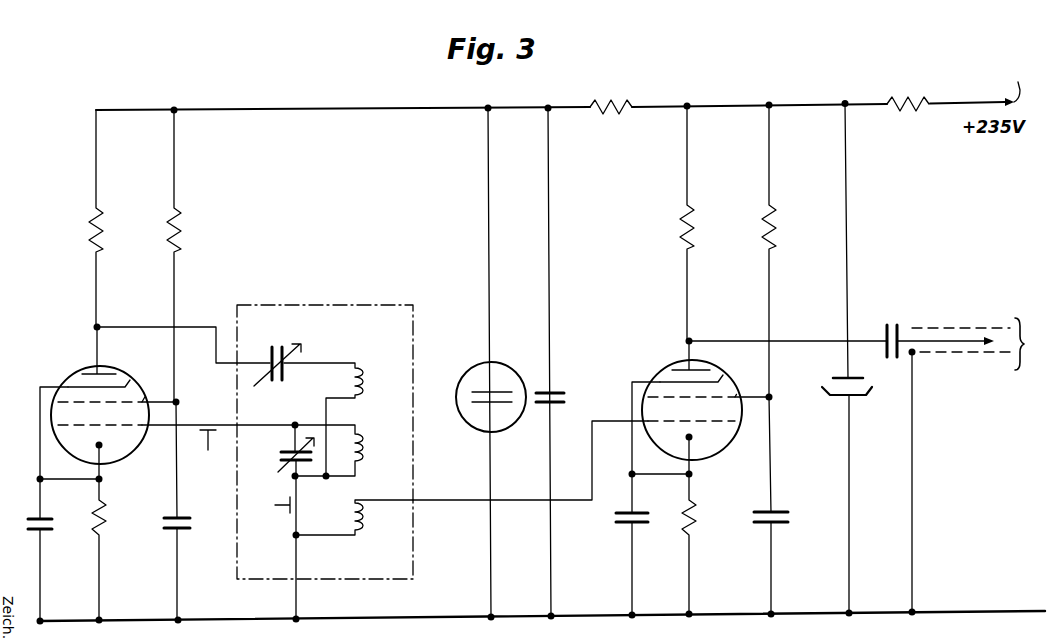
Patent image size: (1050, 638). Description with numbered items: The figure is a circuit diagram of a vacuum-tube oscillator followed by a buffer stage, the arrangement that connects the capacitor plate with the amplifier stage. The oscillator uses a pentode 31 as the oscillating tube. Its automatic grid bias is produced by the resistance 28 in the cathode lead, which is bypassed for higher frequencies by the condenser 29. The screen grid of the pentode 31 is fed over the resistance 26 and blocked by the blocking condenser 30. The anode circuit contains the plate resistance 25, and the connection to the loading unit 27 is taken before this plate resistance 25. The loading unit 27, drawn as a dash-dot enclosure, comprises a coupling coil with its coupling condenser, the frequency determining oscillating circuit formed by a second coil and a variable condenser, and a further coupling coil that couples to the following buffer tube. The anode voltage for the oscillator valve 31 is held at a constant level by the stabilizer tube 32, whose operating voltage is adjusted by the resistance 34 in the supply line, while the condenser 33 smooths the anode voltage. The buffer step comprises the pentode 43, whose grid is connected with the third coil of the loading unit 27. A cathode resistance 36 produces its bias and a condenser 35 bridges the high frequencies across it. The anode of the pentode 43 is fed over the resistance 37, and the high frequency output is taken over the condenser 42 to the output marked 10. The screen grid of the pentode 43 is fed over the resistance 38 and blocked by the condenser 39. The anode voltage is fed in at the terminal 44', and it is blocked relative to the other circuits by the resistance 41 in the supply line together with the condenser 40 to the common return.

The plate resistance 25 is at (100, 248).
The resistance 26 is at (178, 248).
The loading unit 27 is at (358, 307).
The resistance 28 is at (103, 530).
The condenser 29 is at (44, 531).
The blocking condenser 30 is at (182, 530).
The pentode 31 is at (126, 450).
The stabilizer tube 32 is at (506, 422).
The condenser 33 is at (556, 404).
The resistance 34 is at (610, 112).
The condenser 35 is at (638, 524).
The cathode resistance 36 is at (695, 530).
The resistance 37 is at (691, 242).
The resistance 38 is at (773, 242).
The condenser 39 is at (776, 510).
The condenser 40 is at (838, 397).
The resistance 41 is at (905, 109).
The condenser 42 is at (900, 328).
The pentode 43 is at (718, 445).
The anode voltage feed point 44' is at (1018, 81).
The high-frequency output 10 is at (981, 465).